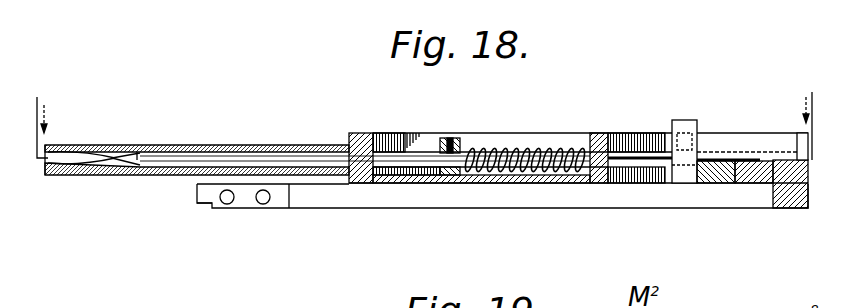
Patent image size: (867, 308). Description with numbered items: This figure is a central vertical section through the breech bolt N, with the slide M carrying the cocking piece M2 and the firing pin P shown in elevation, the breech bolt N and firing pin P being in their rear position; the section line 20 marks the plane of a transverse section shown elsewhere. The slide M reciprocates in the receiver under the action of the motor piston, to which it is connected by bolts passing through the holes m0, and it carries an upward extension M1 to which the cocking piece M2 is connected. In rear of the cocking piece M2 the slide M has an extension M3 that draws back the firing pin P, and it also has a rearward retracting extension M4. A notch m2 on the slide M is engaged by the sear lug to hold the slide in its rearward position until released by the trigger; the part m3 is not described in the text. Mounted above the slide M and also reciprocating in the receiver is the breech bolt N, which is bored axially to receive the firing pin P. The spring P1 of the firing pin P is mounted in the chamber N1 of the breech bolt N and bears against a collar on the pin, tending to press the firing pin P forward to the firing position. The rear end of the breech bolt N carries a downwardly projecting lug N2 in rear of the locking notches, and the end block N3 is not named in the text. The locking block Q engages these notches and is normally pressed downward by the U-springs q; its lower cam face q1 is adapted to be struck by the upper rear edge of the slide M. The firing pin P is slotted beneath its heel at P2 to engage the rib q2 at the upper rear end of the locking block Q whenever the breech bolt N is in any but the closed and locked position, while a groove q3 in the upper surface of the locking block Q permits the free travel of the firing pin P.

The section line 20 is at (420, 107).
The breech bolt N is at (255, 145).
The chamber N1 is at (408, 133).
The downwardly projecting lug N2 is at (785, 195).
The end block N3 is at (790, 170).
The firing pin P is at (305, 152).
The spring P1 is at (795, 152).
The slot P2 is at (512, 173).
The slide M is at (398, 208).
The upward extension M1 is at (681, 185).
The cocking piece M2 is at (697, 120).
The extension M3 is at (721, 133).
The rearward retracting extension M4 is at (762, 183).
The holes m0 is at (263, 207).
The notch m2 is at (202, 207).
The base part m3 is at (763, 200).
The locking block Q is at (712, 183).
The U-springs q is at (728, 160).
The lower cam face q1 is at (747, 190).
The rib q2 is at (735, 160).
The groove q3 is at (705, 152).